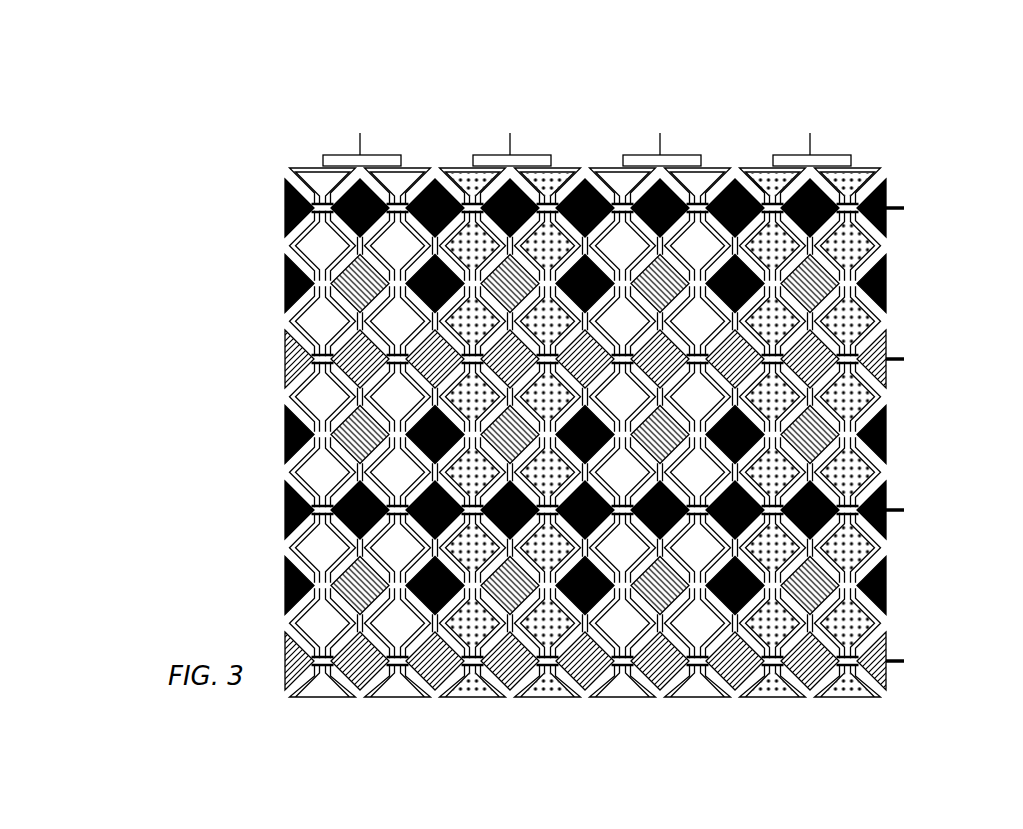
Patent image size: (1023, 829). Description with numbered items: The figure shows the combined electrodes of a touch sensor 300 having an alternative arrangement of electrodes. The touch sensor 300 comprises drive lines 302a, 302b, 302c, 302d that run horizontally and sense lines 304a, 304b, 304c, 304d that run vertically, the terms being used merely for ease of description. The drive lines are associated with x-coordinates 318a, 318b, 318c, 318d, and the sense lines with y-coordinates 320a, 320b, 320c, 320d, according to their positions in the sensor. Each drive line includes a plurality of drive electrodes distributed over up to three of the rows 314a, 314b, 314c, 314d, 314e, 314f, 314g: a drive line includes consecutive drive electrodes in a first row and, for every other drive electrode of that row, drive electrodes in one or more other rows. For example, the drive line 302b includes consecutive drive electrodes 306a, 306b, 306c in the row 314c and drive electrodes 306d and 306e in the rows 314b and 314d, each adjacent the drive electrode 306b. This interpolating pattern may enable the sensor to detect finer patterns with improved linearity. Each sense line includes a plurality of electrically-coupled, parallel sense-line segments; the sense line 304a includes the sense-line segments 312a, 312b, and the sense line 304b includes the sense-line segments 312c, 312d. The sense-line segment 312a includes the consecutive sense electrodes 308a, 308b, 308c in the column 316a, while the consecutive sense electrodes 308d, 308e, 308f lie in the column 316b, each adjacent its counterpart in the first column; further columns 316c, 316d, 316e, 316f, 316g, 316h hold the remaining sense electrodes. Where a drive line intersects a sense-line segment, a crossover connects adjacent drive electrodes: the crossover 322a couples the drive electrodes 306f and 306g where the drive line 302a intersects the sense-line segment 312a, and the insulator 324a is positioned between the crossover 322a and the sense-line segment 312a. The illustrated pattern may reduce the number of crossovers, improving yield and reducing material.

The touch sensor 300 is at (164, 240).
The drive line 302a is at (906, 176).
The drive line 302b is at (906, 327).
The drive line 302c is at (906, 478).
The drive line 302d is at (906, 629).
The sense line 304a is at (347, 142).
The sense line 304b is at (497, 142).
The sense line 304c is at (647, 142).
The sense line 304d is at (797, 142).
The drive electrode 306a is at (492, 361).
The drive electrode 306b is at (492, 361).
The drive electrode 306c is at (568, 340).
The drive electrode 306d is at (490, 274).
The drive electrode 306e is at (498, 409).
The drive electrode 306f is at (288, 198).
The drive electrode 306g is at (340, 188).
The sense electrode 308a is at (303, 461).
The sense electrode 308b is at (303, 535).
The sense electrode 308c is at (303, 610).
The sense electrode 308d is at (380, 467).
The sense electrode 308e is at (380, 547).
The sense electrode 308f is at (398, 622).
The sense-line segment 312a is at (300, 692).
The sense-line segment 312b is at (385, 692).
The sense-line segment 312c is at (465, 691).
The sense-line segment 312d is at (542, 691).
The row 314a is at (707, 208).
The row 314b is at (647, 284).
The row 314c is at (646, 359).
The row 314d is at (647, 435).
The row 314e is at (646, 510).
The row 314f is at (645, 586).
The row 314g is at (647, 661).
The column 316a is at (323, 257).
The column 316b is at (398, 257).
The column 316c is at (473, 370).
The column 316d is at (548, 370).
The column 316e is at (623, 390).
The column 316f is at (698, 390).
The column 316g is at (773, 390).
The column 316h is at (848, 390).
The x-coordinate 318a is at (908, 212).
The x-coordinate 318b is at (908, 363).
The x-coordinate 318c is at (908, 514).
The x-coordinate 318d is at (908, 665).
The y-coordinate 320a is at (367, 117).
The y-coordinate 320b is at (517, 117).
The y-coordinate 320c is at (667, 117).
The y-coordinate 320d is at (817, 117).
The crossover 322a is at (310, 195).
The insulator 324a is at (311, 204).